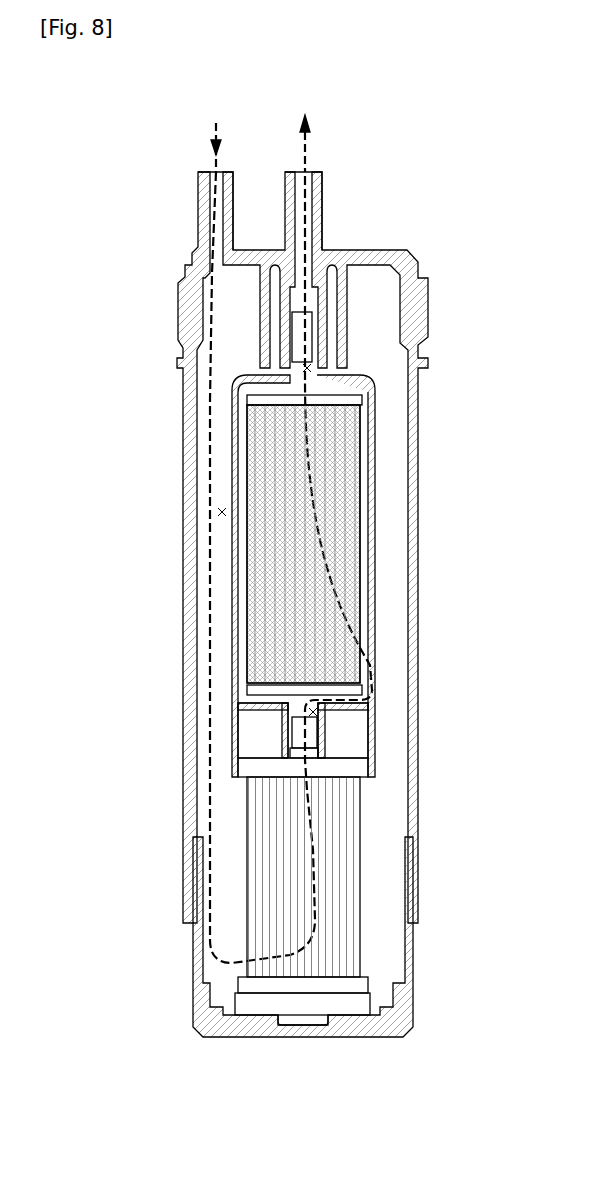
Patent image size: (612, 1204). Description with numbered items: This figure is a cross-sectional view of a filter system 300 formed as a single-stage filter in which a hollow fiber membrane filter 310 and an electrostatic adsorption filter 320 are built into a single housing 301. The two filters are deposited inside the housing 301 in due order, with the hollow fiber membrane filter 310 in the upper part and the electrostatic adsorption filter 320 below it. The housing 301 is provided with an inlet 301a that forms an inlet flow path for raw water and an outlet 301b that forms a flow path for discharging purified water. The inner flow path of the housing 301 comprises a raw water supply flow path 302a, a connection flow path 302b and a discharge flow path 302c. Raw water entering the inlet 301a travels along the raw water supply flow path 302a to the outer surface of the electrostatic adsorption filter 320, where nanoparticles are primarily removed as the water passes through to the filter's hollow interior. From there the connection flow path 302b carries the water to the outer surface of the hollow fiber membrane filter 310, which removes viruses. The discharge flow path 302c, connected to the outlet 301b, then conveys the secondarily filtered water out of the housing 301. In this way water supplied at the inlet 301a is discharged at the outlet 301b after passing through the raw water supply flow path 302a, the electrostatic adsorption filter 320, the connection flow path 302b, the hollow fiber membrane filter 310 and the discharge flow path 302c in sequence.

The filter system 300 is at (502, 158).
The housing 301 is at (418, 292).
The inlet 301a is at (213, 170).
The outlet 301b is at (307, 170).
The raw water supply flow path 302a is at (220, 513).
The connection flow path 302b is at (318, 713).
The discharge flow path 302c is at (312, 369).
The hollow fiber membrane filter 310 is at (340, 508).
The electrostatic adsorption filter 320 is at (345, 830).